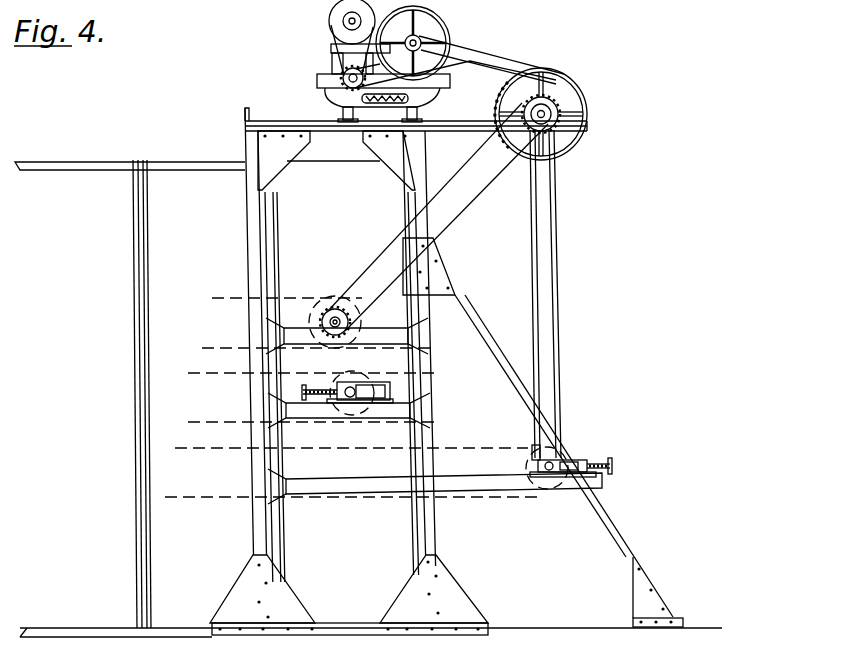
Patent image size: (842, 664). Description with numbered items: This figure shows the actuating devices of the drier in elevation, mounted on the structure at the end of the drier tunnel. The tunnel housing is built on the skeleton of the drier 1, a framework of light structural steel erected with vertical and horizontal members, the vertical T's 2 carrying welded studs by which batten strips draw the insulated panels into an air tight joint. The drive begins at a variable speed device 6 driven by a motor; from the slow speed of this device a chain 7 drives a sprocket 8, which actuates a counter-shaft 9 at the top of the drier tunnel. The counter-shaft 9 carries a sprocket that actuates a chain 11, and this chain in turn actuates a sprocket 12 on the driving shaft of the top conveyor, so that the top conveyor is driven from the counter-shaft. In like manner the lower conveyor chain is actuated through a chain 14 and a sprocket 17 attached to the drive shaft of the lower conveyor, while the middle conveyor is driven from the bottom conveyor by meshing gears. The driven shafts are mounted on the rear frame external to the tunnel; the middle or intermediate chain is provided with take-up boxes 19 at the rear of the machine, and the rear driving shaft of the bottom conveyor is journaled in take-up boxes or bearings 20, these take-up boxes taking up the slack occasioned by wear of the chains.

The skeleton of the drier 1 is at (118, 166).
The vertical T's 2 is at (135, 236).
The variable speed device 6 is at (319, 80).
The chain 7 is at (497, 60).
The sprocket 8 is at (563, 100).
The counter-shaft 9 is at (544, 110).
The chain 11 is at (508, 236).
The sprocket 12 is at (553, 133).
The chain 14 is at (557, 296).
The sprocket 17 is at (537, 452).
The take-up boxes 19 is at (392, 388).
The take-up boxes or bearings 20 is at (588, 458).